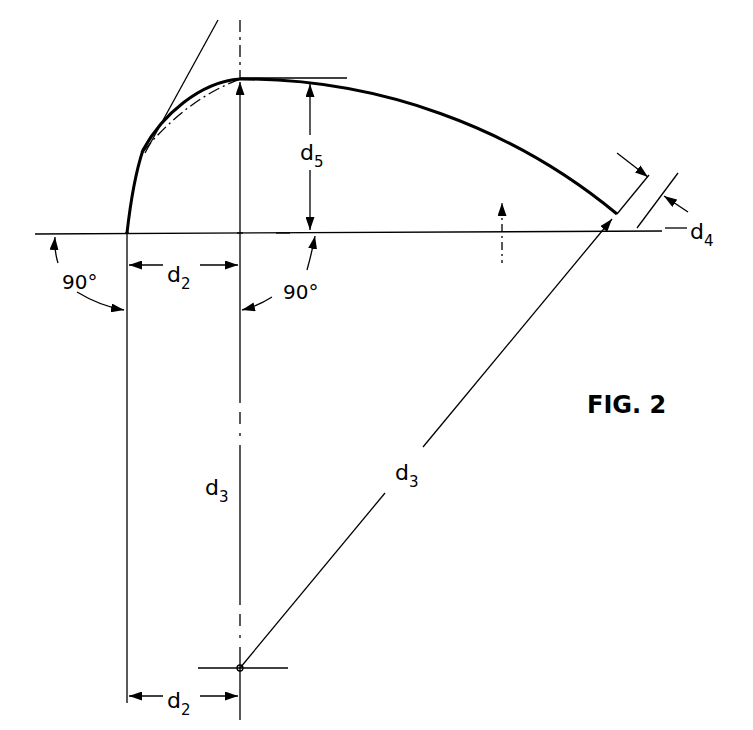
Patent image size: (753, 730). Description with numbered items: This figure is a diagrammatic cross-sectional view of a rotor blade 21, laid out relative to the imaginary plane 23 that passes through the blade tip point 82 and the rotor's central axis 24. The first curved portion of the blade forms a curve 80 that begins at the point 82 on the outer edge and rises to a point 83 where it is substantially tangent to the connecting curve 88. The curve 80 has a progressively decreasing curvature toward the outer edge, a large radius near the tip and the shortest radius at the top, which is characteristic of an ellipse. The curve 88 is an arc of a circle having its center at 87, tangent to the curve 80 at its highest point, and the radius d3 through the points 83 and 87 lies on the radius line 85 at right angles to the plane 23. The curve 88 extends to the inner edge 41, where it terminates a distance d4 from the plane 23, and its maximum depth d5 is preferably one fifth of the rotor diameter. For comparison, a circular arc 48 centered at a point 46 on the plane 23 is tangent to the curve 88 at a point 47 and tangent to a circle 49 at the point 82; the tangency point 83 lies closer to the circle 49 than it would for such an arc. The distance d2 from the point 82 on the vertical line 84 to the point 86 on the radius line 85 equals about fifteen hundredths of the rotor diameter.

The rotor blade 21 is at (182, 102).
The imaginary plane 23 is at (399, 233).
The central axis 24 is at (502, 233).
The inner edge 41 is at (618, 211).
The center point 46 is at (283, 233).
The tangent point 47 is at (278, 78).
The circular arc 48 is at (194, 106).
The circle 49 is at (197, 46).
The curve 80 is at (143, 153).
The blade tip point 82 is at (127, 233).
The point of tangency 83 is at (243, 78).
The vertical line 84 is at (127, 466).
The radius line 85 is at (240, 167).
The point 86 is at (243, 236).
The center 87 is at (243, 671).
The curve 88 is at (480, 130).